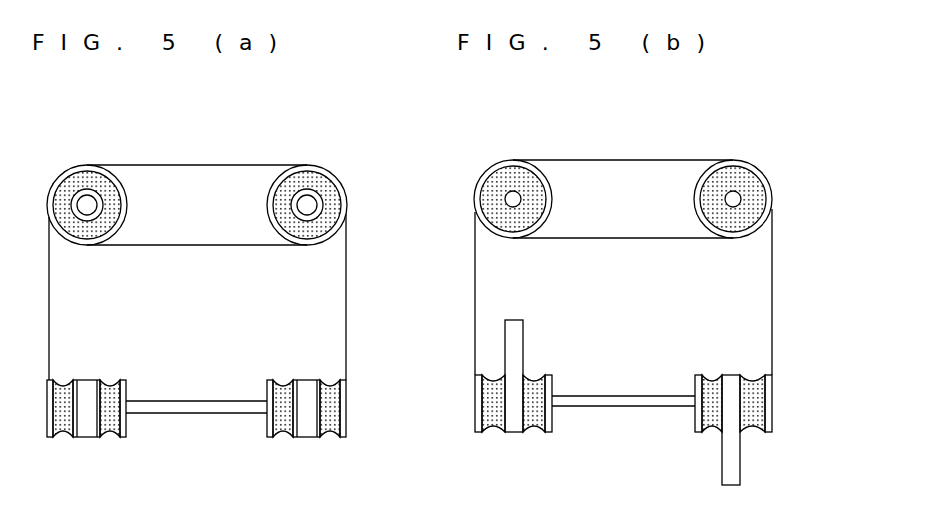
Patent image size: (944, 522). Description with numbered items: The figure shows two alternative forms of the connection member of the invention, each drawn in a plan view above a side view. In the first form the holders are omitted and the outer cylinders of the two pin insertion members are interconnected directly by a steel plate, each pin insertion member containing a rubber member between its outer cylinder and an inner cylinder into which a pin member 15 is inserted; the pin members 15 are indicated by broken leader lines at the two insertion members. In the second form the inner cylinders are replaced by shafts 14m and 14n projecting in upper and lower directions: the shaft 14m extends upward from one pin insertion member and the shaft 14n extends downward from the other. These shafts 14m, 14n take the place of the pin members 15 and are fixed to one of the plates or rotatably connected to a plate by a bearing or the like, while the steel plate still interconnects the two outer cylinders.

The pin member 15 is at (75, 172).
The shaft 14m is at (512, 193).
The shaft 14n is at (733, 195).